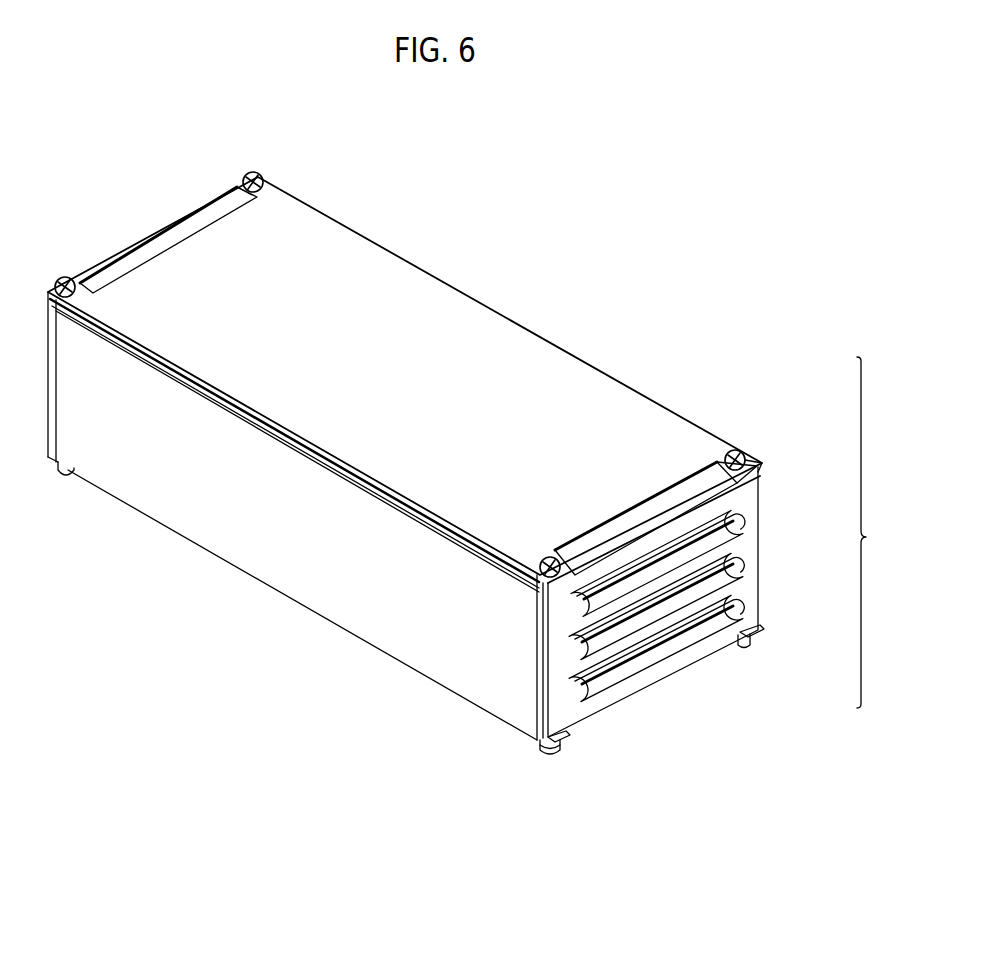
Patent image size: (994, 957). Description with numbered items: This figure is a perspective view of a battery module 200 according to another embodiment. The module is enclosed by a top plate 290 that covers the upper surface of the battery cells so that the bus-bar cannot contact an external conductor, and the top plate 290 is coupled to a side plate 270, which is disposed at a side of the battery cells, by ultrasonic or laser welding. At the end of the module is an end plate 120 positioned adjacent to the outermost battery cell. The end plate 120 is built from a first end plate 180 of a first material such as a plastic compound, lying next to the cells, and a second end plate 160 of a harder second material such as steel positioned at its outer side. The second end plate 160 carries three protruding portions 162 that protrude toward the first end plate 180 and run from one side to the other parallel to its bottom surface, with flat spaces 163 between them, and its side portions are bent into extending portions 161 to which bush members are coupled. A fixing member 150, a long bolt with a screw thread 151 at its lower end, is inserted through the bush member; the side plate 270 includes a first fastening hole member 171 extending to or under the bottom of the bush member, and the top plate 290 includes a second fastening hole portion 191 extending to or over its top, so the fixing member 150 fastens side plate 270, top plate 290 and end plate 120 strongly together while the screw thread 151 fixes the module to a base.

The battery module 200 is at (590, 197).
The top plate 290 is at (495, 338).
The side plate 270 is at (497, 703).
The end plate 120 is at (877, 532).
The fixing member 150 is at (743, 457).
The screw thread 151 is at (548, 752).
The second end plate 160 is at (667, 668).
The extending portion 161 is at (545, 702).
The protruding portion 162 is at (713, 530).
The space 163 is at (728, 539).
The first fastening hole member 171 is at (573, 738).
The first end plate 180 is at (190, 232).
The second fastening hole portion 191 is at (760, 462).